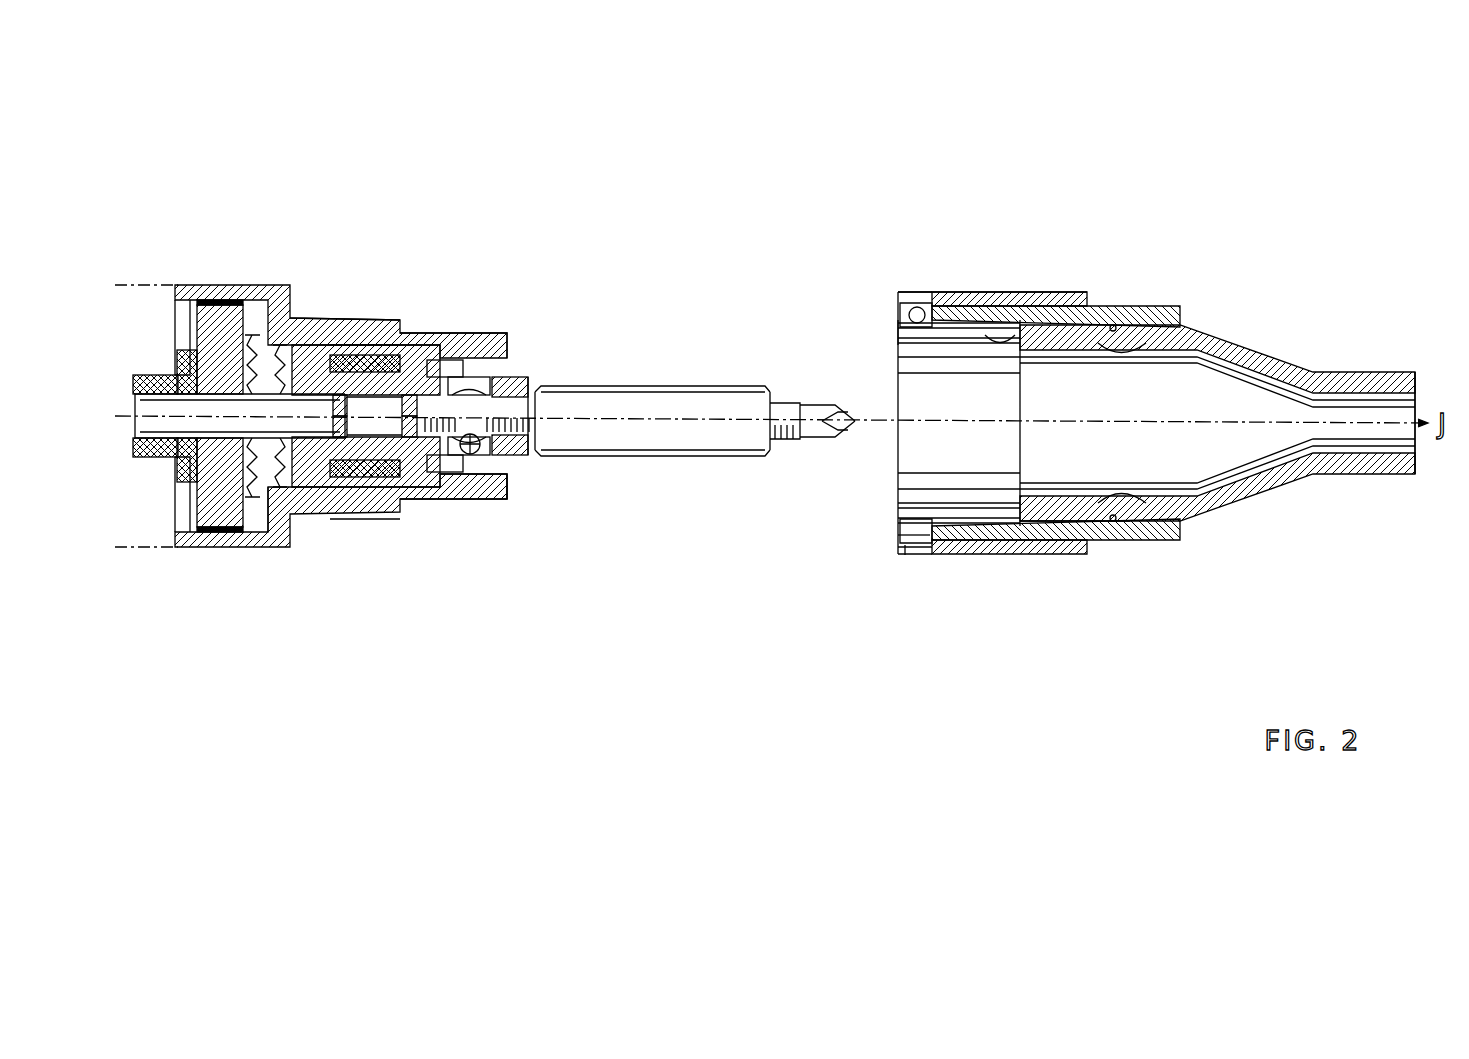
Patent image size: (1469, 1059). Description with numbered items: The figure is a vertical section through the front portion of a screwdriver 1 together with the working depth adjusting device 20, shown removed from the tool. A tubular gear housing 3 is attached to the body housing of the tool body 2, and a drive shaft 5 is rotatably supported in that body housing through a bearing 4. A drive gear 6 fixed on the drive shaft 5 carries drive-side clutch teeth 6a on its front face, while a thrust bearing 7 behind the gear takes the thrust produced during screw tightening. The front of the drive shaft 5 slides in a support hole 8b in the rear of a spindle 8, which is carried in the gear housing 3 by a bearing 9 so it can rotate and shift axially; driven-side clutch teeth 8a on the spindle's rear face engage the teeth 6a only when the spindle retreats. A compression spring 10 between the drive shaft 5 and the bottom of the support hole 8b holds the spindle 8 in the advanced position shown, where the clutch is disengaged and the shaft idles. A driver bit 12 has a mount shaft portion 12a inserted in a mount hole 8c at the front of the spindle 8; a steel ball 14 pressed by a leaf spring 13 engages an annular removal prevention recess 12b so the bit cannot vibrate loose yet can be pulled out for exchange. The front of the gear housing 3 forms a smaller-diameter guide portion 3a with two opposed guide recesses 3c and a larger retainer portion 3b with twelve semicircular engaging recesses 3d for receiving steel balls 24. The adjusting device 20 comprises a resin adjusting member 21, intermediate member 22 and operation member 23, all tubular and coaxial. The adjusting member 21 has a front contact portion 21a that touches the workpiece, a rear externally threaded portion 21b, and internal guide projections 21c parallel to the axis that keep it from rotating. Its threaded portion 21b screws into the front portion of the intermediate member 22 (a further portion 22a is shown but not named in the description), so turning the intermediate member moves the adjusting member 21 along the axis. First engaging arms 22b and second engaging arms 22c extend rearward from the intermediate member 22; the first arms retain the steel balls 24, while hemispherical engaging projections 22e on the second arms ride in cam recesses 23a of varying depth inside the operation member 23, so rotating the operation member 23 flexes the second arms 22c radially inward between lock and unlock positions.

The screwdriver 1 is at (178, 270).
The tool body 2 is at (133, 282).
The gear housing 3 is at (222, 283).
The guide portion 3a is at (500, 505).
The retainer portion 3b is at (372, 318).
The guide recesses 3c is at (444, 332).
The engaging recesses 3d is at (310, 316).
The bearing 4 is at (152, 460).
The drive shaft 5 is at (212, 430).
The drive gear 6 is at (251, 445).
The drive-side clutch teeth 6a is at (254, 332).
The thrust bearing 7 is at (188, 470).
The spindle 8 is at (400, 332).
The driven-side clutch teeth 8a is at (283, 470).
The support hole 8b is at (373, 430).
The mount hole 8c is at (538, 402).
The bearing 9 is at (348, 354).
The compression spring 10 is at (340, 430).
The driver bit 12 is at (664, 385).
The mount shaft portion 12a is at (516, 478).
The annular removal prevention recess 12b is at (515, 376).
The leaf spring 13 is at (470, 376).
The steel ball 14 is at (468, 456).
The working depth adjusting device 20 is at (1108, 266).
The adjusting member 21 is at (1281, 342).
The contact portion 21a is at (1420, 371).
The threaded portion 21b is at (1052, 520).
The guide projections 21c is at (1178, 330).
The intermediate member 22 is at (1142, 298).
The socket arcuate portion 22a is at (993, 336).
The first engaging arms 22b is at (897, 340).
The second engaging arms 22c is at (896, 538).
The engaging projection 22e is at (917, 550).
The operation member 23 is at (1045, 288).
The cam recesses 23a is at (900, 550).
The steel balls 24 is at (905, 318).